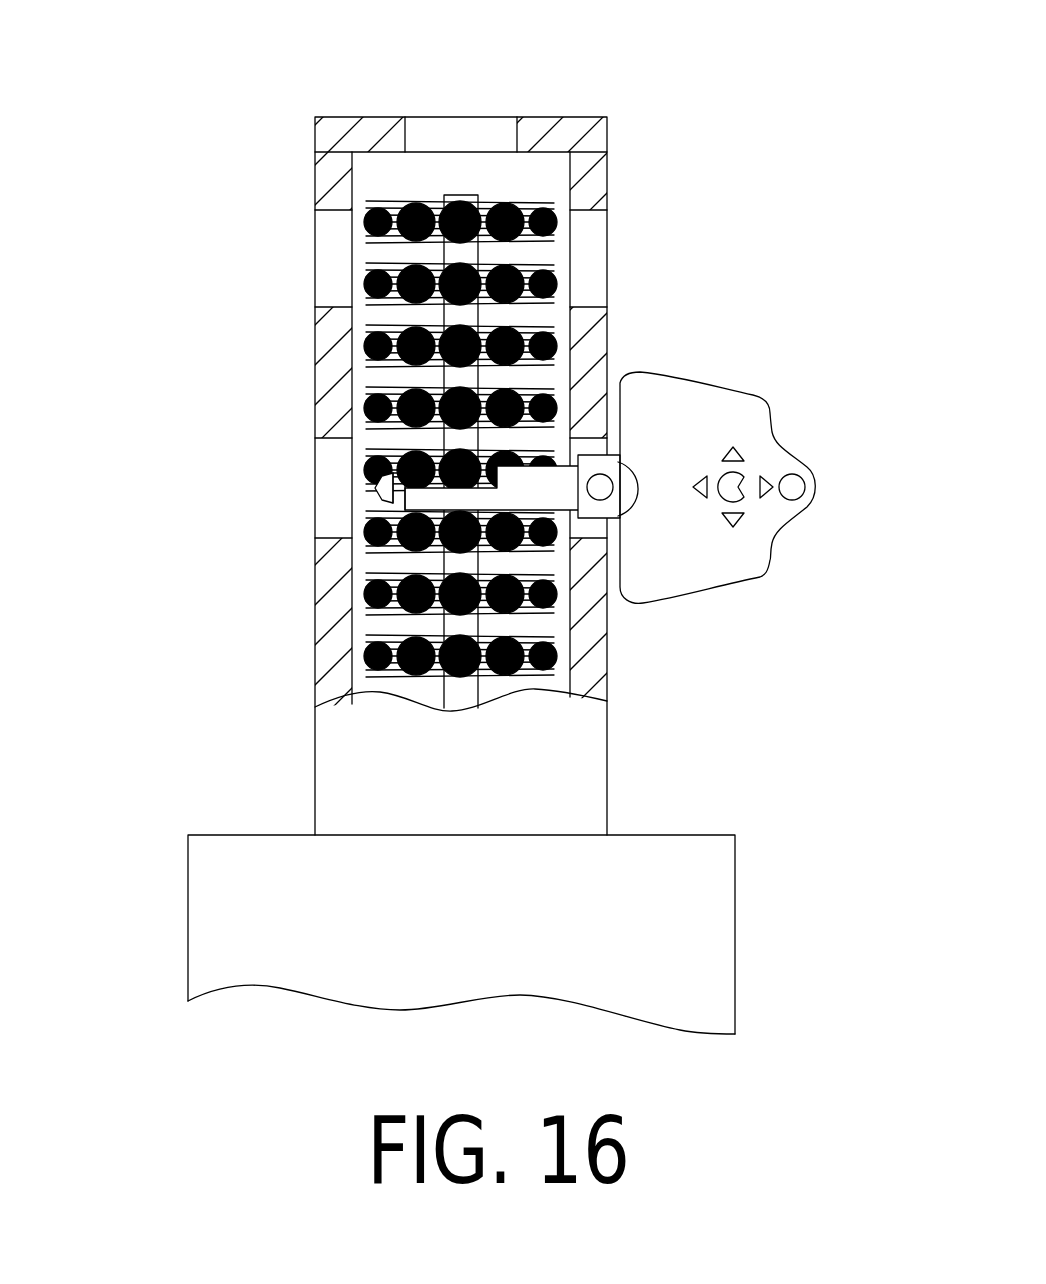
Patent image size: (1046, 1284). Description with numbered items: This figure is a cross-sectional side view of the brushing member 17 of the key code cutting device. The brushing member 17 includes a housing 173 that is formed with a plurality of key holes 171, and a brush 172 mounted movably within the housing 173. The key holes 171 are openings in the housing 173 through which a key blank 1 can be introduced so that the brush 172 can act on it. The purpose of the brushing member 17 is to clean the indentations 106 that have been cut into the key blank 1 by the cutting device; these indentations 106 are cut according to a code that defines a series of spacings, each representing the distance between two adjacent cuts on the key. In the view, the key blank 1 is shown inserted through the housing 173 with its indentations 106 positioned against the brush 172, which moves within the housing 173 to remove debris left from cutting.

The brushing member 17 is at (523, 517).
The key holes 171 is at (323, 268).
The brush 172 is at (510, 203).
The housing 173 is at (603, 362).
The indentations 106 is at (385, 468).
The key blank 1 is at (767, 570).